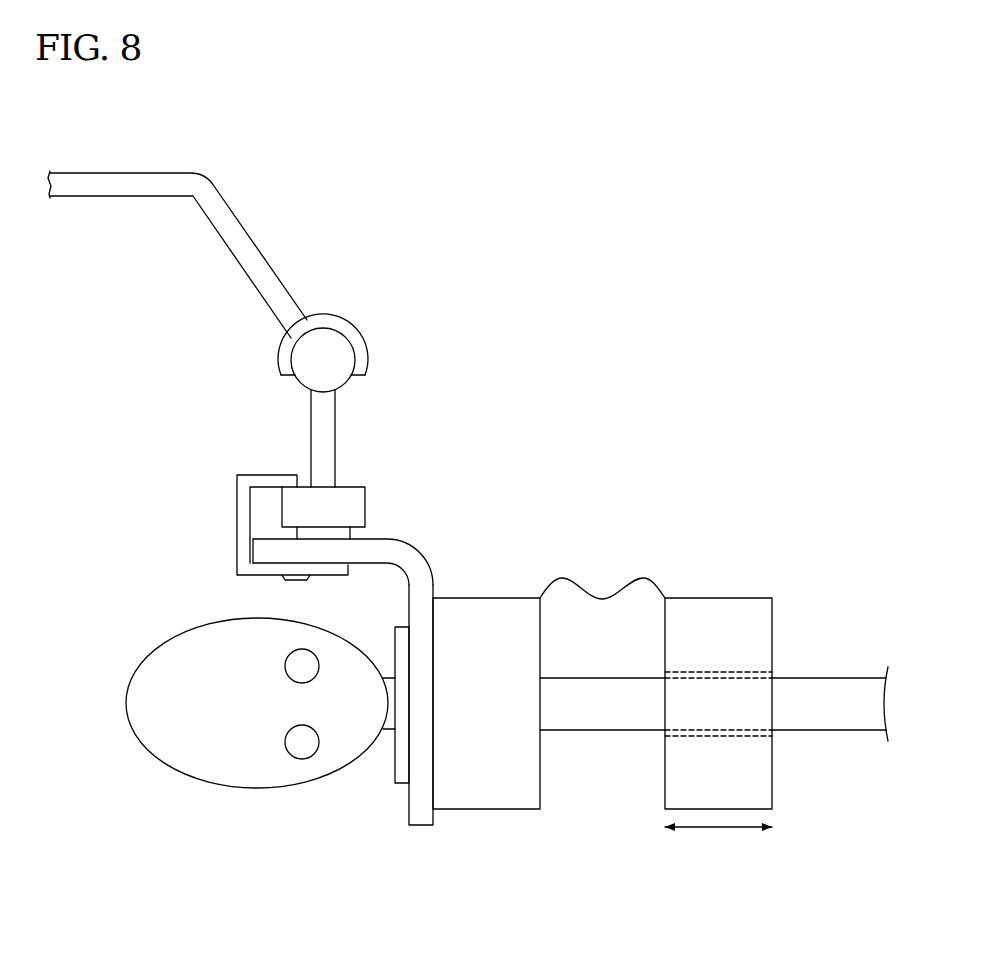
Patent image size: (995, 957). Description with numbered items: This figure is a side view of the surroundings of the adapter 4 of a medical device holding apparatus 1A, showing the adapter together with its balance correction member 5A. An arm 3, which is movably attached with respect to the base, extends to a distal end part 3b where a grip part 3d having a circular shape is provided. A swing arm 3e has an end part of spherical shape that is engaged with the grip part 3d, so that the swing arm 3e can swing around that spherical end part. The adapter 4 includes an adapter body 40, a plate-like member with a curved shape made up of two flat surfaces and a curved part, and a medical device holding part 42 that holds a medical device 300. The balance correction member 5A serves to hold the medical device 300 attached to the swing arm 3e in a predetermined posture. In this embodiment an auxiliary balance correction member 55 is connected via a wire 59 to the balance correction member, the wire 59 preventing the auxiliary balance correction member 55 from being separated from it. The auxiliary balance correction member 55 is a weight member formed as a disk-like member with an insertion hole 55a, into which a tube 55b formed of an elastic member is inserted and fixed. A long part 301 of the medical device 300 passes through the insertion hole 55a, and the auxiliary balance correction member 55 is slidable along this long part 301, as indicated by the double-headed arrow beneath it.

The medical device holding apparatus 1A is at (308, 158).
The arm 3 is at (158, 180).
The distal end part 3b is at (312, 312).
The grip part 3d is at (357, 329).
The swing arm 3e is at (322, 418).
The adapter 4 is at (404, 534).
The adapter body 40 is at (420, 818).
The medical device holding part 42 is at (400, 772).
The medical device 300 is at (162, 775).
The balance correction member 5A is at (510, 800).
The wire 59 is at (602, 598).
The long part 301 is at (830, 720).
The auxiliary balance correction member 55 is at (718, 608).
The insertion hole 55a is at (690, 733).
The tube 55b is at (747, 672).